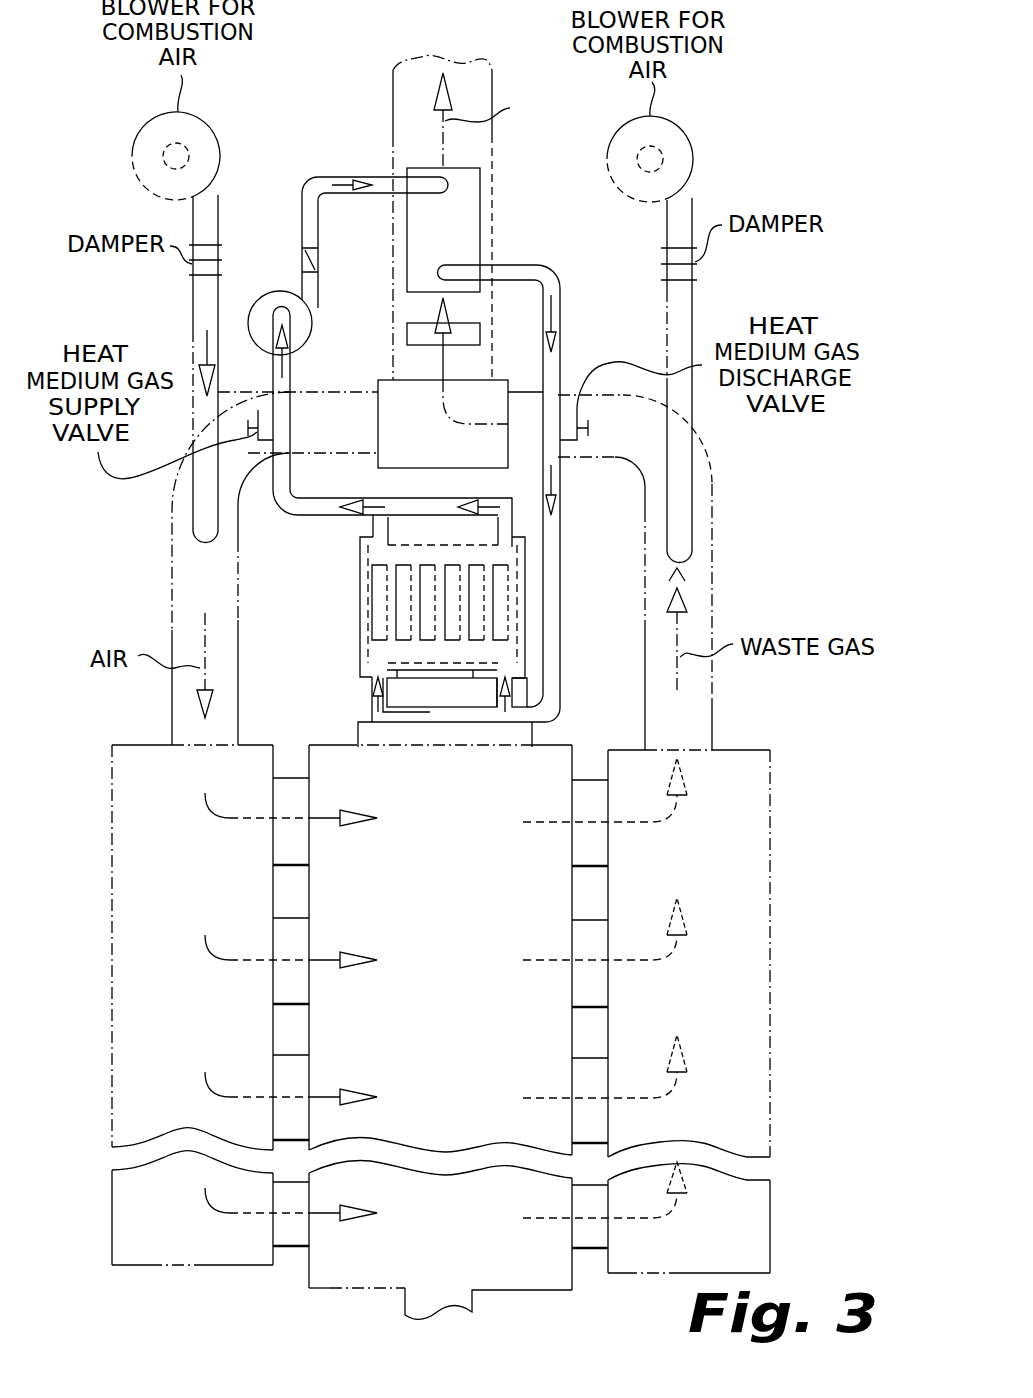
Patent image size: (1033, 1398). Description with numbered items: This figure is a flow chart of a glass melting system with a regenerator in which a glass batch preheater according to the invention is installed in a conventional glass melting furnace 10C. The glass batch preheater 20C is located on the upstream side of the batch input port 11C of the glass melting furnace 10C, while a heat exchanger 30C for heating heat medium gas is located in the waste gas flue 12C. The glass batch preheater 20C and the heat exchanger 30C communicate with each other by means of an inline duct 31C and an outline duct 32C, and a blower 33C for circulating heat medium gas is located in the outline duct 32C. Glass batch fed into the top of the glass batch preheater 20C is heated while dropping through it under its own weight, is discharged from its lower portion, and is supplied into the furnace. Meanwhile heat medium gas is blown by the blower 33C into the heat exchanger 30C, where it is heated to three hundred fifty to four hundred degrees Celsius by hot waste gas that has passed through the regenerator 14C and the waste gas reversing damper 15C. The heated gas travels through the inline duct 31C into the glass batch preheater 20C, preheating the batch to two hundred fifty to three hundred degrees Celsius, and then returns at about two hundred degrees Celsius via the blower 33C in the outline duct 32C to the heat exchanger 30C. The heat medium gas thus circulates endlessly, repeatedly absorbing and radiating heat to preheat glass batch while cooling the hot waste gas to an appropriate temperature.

The glass melting furnace 10C is at (330, 1290).
The batch input port 11C is at (358, 731).
The waste gas flue 12C is at (393, 102).
The regenerator 14C is at (133, 1266).
The waste gas reversing damper 15C is at (378, 380).
The glass batch preheater 20C is at (360, 632).
The heat exchanger for heating heat medium gas 30C is at (481, 210).
The inline duct 31C is at (560, 614).
The outline duct 32C is at (300, 516).
The blower 33C is at (280, 292).